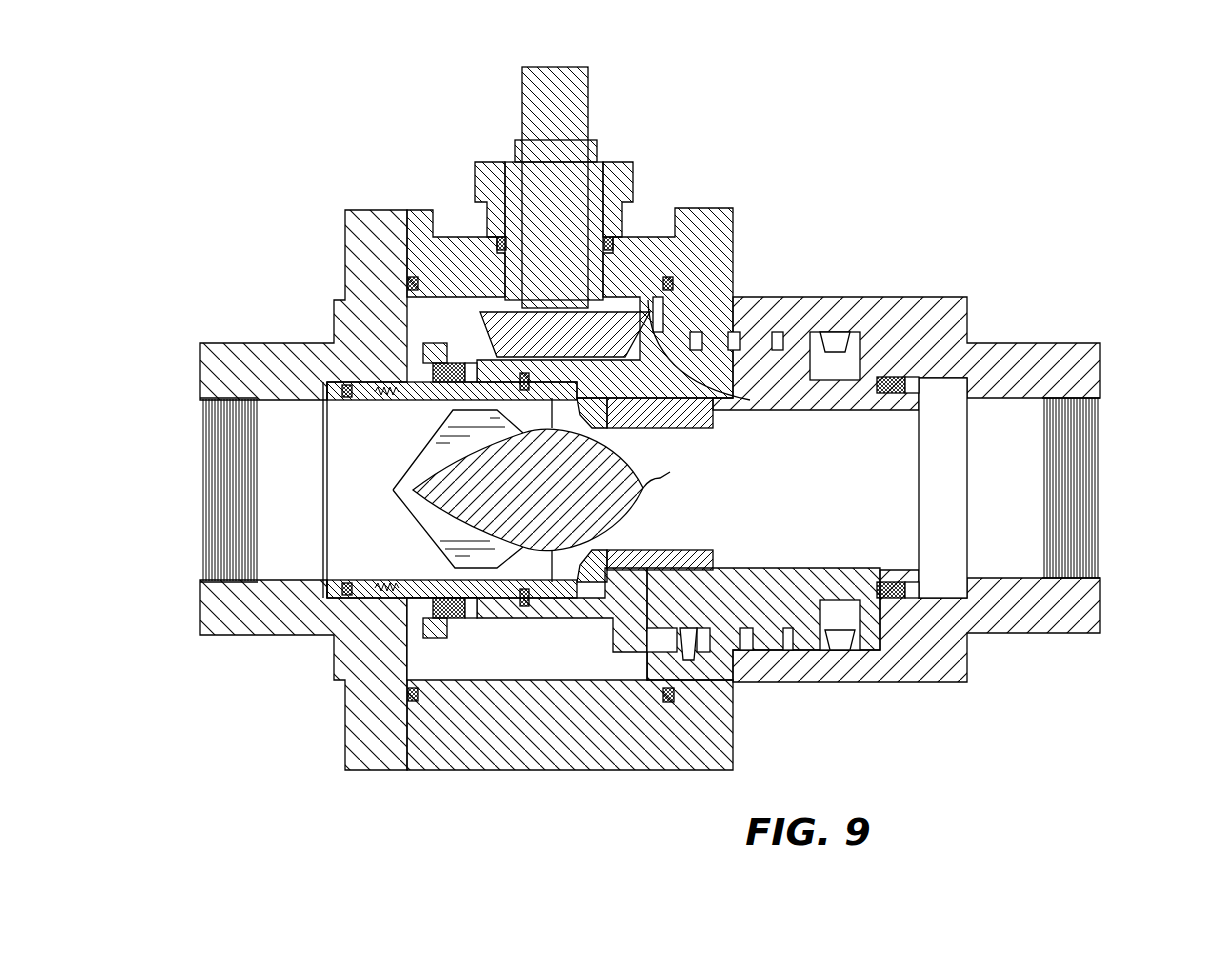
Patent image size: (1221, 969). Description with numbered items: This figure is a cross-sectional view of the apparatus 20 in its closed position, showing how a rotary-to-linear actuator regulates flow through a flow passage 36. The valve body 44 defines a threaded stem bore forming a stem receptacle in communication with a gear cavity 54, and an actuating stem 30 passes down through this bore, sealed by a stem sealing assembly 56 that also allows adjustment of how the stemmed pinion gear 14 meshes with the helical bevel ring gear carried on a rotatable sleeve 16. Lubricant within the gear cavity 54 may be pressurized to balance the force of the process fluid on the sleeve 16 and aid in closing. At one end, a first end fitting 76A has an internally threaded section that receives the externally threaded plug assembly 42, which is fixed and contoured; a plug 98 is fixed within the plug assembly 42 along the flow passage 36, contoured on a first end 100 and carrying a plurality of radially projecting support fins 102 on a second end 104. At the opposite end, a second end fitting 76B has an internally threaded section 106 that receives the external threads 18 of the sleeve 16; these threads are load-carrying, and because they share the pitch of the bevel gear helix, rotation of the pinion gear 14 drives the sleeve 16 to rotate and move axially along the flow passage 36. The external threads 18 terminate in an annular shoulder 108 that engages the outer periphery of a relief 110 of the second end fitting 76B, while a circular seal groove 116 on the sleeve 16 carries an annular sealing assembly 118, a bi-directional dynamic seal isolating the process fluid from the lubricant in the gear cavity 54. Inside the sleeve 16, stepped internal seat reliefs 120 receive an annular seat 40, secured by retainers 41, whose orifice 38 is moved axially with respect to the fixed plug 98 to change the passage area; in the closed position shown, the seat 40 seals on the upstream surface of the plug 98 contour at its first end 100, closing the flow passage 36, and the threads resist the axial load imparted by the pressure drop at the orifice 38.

The apparatus 20 is at (1018, 132).
The actuating stem 30 is at (585, 92).
The stem sealing assembly 56 is at (650, 112).
The stemmed pinion gear 14 is at (447, 255).
The valve body 44 is at (455, 240).
The annular shoulder 108 is at (648, 300).
The stepped internal seat reliefs 120 is at (730, 332).
The external threads 18 is at (772, 333).
The internally threaded section 106 is at (838, 340).
The annular sealing assembly 118 is at (879, 385).
The gear cavity 54 is at (430, 320).
The first end fitting 76A is at (200, 362).
The plug assembly 42 is at (398, 395).
The second end 104 is at (393, 488).
The support fins 102 is at (430, 520).
The plug 98 is at (528, 502).
The flow passage 36 is at (838, 490).
The first end 100 is at (668, 472).
The second end fitting 76B is at (1083, 605).
The sleeve 16 is at (782, 600).
The circular seal groove 116 is at (893, 600).
The retainers 41 is at (521, 606).
The orifice 38 is at (557, 565).
The seat 40 is at (620, 640).
The relief 110 is at (688, 660).